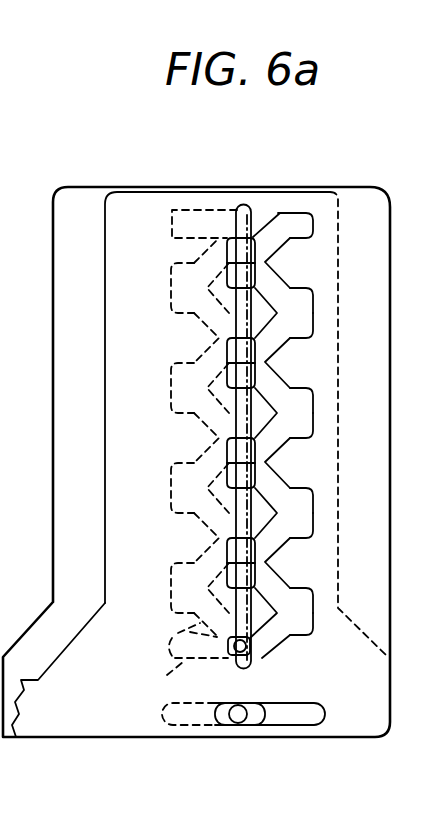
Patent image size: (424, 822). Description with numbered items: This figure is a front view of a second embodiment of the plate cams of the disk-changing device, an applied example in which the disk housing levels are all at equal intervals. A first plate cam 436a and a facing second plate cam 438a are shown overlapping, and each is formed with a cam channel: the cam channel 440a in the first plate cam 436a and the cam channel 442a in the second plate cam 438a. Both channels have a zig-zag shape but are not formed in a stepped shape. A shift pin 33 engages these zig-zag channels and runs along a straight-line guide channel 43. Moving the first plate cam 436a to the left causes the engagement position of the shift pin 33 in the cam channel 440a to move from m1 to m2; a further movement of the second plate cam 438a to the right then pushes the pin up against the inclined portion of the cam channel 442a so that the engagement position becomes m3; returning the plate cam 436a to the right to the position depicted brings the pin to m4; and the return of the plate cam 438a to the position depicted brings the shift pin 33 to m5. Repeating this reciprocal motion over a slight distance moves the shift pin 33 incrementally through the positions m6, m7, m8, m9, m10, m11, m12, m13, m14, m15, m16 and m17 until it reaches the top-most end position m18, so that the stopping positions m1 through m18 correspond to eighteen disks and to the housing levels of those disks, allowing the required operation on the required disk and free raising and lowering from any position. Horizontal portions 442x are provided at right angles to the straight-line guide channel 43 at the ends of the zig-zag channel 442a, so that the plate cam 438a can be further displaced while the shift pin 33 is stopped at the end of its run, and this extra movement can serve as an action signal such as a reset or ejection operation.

The second plate cam 438a is at (88, 197).
The first plate cam 436a is at (363, 203).
The cam channel 440a is at (293, 213).
The horizontal portions 442x is at (188, 212).
The cam channel 442a is at (163, 633).
The straight-line guide channel 43 is at (245, 203).
The shift pin 33 is at (232, 656).
The engagement position m1 is at (258, 646).
The engagement position m2 is at (315, 626).
The engagement position m3 is at (313, 597).
The engagement position m4 is at (226, 580).
The engagement position m5 is at (227, 538).
The engagement position m6 is at (313, 530).
The engagement position m7 is at (313, 497).
The engagement position m8 is at (226, 478).
The engagement position m9 is at (226, 448).
The engagement position m10 is at (313, 430).
The engagement position m11 is at (313, 395).
The engagement position m12 is at (224, 373).
The engagement position m13 is at (227, 340).
The engagement position m14 is at (313, 327).
The engagement position m15 is at (313, 292).
The engagement position m16 is at (237, 277).
The engagement position m17 is at (225, 244).
The top-most end position m18 is at (315, 228).